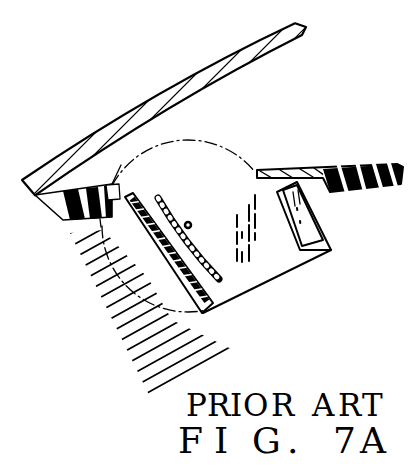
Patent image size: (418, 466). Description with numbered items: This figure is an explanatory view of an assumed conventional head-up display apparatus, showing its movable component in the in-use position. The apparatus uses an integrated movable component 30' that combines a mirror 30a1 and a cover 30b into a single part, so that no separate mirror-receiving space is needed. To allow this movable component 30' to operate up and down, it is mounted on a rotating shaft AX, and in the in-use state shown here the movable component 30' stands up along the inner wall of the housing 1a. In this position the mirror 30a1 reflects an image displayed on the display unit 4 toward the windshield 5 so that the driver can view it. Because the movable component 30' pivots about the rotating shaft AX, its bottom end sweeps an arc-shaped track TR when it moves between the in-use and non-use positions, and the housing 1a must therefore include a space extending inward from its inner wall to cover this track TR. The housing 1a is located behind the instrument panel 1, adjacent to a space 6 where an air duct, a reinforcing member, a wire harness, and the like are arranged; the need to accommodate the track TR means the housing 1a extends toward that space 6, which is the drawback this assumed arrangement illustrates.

The windshield 5 is at (203, 73).
The arc-shaped track TR is at (175, 141).
The movable component 30' is at (130, 202).
The mirror 30a1 is at (218, 277).
The cover 30b is at (103, 230).
The space 6 is at (116, 277).
The rotating shaft AX is at (189, 222).
The instrument panel 1 is at (343, 163).
The housing 1a is at (282, 265).
The display unit 4 is at (300, 223).